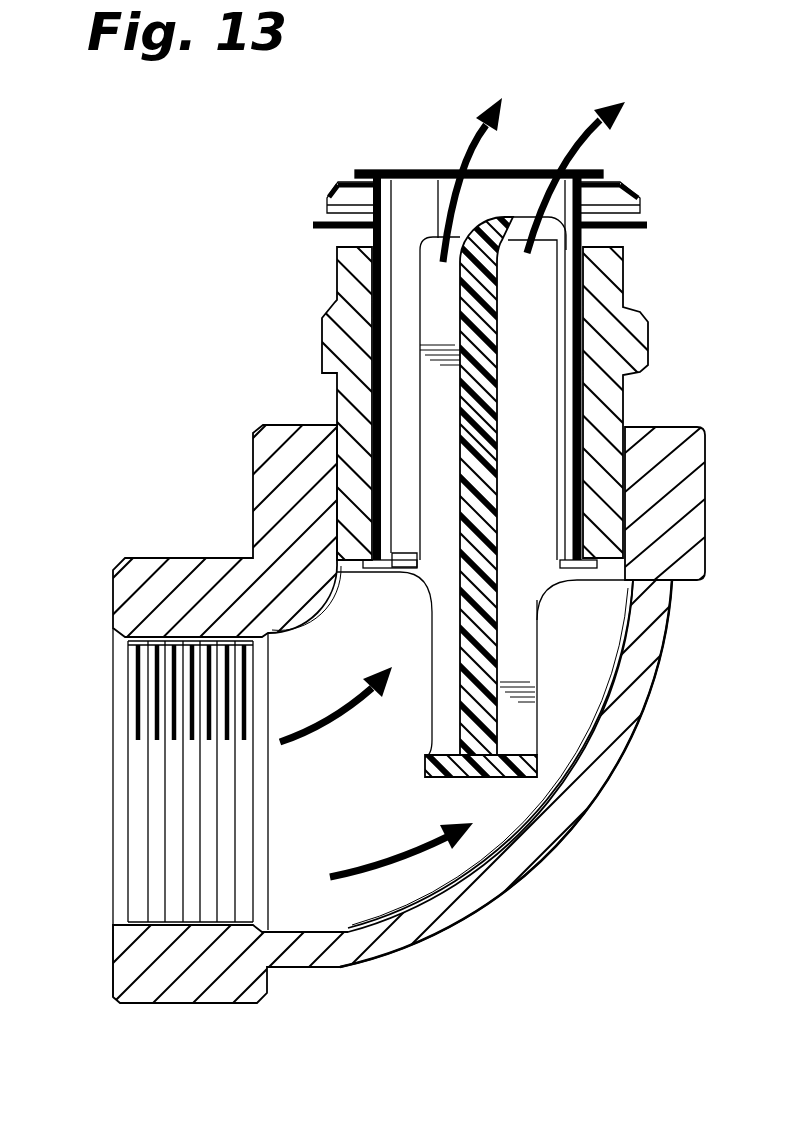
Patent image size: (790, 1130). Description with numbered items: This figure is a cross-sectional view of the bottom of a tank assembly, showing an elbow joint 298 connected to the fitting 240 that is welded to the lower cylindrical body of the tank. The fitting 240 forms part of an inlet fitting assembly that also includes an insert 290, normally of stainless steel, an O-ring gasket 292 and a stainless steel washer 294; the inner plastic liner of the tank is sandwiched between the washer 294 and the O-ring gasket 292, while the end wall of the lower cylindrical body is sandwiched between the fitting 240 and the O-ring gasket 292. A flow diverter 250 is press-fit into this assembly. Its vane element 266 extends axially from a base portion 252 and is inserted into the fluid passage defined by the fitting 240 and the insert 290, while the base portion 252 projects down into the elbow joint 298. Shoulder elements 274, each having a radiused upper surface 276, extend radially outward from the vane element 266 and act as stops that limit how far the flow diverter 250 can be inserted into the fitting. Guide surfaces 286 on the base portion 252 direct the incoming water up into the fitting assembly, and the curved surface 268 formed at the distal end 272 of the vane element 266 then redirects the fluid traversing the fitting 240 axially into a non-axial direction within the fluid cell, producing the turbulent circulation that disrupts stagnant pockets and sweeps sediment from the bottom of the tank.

The fitting 240 is at (332, 340).
The flow diverter 250 is at (400, 785).
The base portion 252 is at (532, 690).
The vane element 266 is at (538, 357).
The curved surface 268 is at (553, 255).
The distal end 272 is at (526, 238).
The shoulder elements 274 is at (398, 578).
The radiused upper surface 276 is at (418, 553).
The guide surfaces 286 is at (426, 750).
The insert 290 is at (413, 170).
The O-ring gasket 292 is at (316, 221).
The stainless steel washer 294 is at (332, 180).
The elbow joint 298 is at (503, 900).